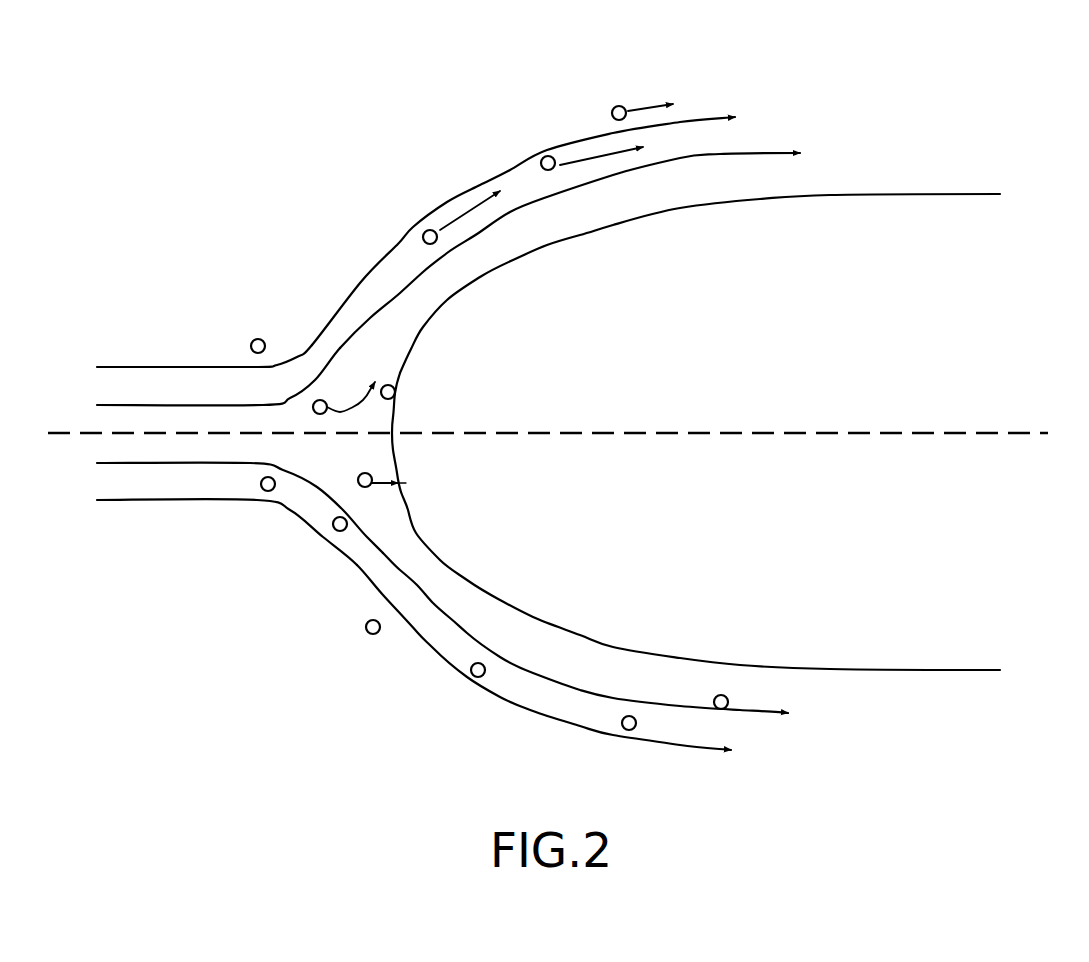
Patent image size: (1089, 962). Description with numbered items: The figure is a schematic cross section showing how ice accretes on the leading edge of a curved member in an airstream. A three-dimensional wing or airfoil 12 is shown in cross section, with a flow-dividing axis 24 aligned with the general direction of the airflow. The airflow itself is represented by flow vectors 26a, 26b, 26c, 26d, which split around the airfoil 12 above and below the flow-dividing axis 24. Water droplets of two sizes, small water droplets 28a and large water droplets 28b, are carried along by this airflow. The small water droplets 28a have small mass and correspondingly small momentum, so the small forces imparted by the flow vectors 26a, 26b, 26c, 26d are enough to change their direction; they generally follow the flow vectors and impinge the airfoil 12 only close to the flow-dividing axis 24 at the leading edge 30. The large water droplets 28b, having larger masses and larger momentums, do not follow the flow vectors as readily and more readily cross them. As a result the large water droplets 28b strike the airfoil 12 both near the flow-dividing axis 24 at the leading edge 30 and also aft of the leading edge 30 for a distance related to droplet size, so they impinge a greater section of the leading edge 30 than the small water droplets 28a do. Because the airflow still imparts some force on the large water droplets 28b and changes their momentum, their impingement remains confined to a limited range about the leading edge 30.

The airfoil 12 is at (643, 380).
The flow-dividing axis 24 is at (812, 377).
The flow vector 26a is at (203, 367).
The flow vector 26b is at (422, 272).
The flow vector 26c is at (383, 553).
The flow vector 26d is at (522, 708).
The small water droplets 28a is at (613, 113).
The large water droplets 28b is at (326, 410).
The leading edge 30 is at (383, 433).